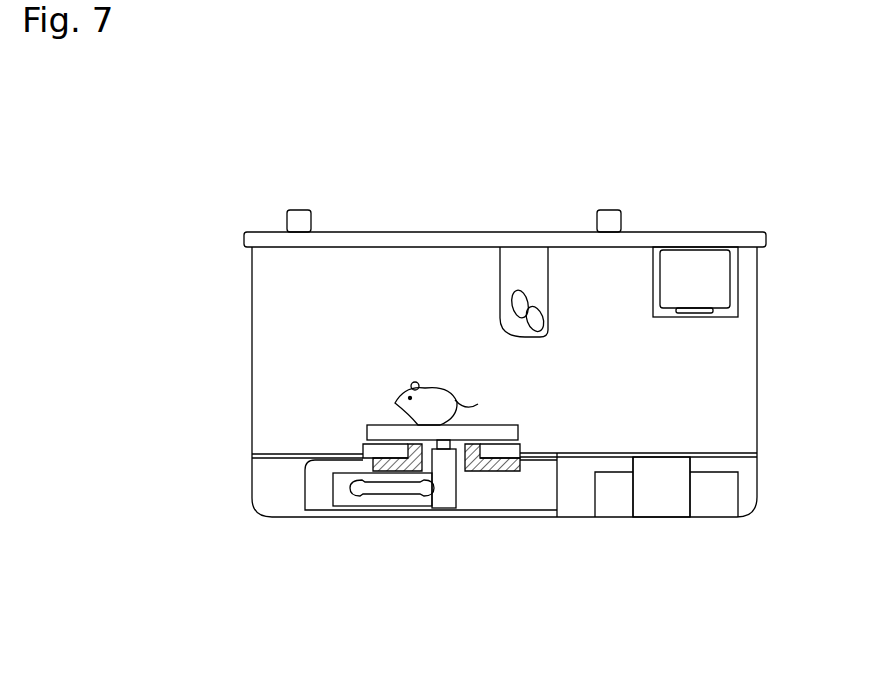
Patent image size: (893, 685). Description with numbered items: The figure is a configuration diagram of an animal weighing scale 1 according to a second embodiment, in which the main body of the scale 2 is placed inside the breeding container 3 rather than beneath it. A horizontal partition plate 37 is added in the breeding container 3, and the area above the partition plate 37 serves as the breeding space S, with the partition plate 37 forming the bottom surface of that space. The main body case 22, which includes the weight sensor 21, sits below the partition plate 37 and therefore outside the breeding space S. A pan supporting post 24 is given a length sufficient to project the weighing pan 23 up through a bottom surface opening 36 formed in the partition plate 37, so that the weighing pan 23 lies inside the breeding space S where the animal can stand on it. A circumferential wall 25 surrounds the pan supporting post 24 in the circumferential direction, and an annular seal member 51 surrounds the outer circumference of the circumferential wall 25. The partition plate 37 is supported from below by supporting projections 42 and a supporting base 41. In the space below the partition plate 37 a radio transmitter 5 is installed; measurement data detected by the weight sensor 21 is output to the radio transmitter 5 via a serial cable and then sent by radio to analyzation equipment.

The animal weighing scale 1 is at (238, 142).
The scale 2 is at (559, 497).
The breeding container 3 is at (241, 292).
The radio transmitter 5 is at (717, 500).
The weight sensor 21 is at (455, 510).
The main body case 22 is at (304, 492).
The weighing pan 23 is at (493, 432).
The pan supporting post 24 is at (446, 506).
The circumferential wall 25 is at (398, 484).
The bottom surface opening 36 is at (385, 468).
The partition plate 37 is at (283, 453).
The supporting base 41 is at (657, 503).
The supporting projections 42 is at (345, 458).
The annular seal member 51 is at (362, 444).
The breeding space S is at (713, 381).